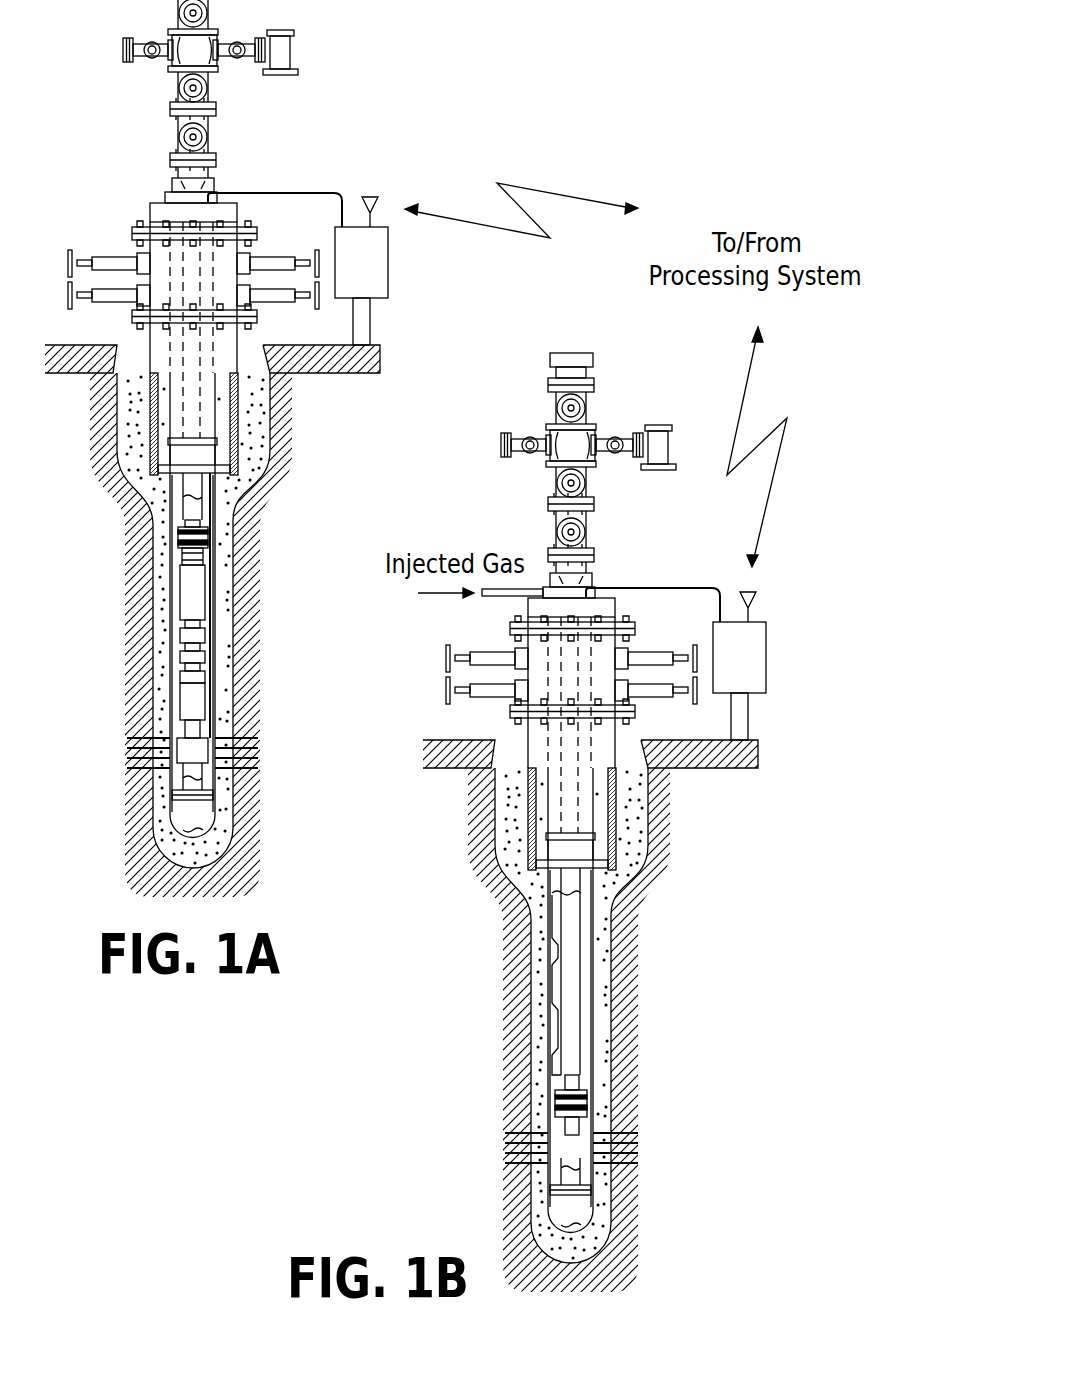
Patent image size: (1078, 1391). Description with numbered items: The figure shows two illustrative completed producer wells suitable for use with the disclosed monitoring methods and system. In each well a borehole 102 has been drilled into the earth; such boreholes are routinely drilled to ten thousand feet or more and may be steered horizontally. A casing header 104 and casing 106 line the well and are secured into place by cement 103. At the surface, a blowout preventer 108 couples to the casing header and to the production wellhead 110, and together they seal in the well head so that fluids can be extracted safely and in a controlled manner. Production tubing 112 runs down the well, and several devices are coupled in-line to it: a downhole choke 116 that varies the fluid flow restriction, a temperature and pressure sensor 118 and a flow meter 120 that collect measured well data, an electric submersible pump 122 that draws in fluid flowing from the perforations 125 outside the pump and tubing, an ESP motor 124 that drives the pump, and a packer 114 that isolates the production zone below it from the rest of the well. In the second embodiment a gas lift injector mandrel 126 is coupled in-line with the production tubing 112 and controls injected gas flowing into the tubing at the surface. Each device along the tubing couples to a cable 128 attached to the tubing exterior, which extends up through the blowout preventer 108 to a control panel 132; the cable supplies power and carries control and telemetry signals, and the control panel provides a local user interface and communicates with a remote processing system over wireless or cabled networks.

In FIG. 1A, the borehole 102 is at (117, 388).
In FIG. 1B, the borehole 102 is at (585, 1016).
In FIG. 1A, the cement 103 is at (150, 482).
In FIG. 1B, the cement 103 is at (530, 1015).
In FIG. 1A, the casing header 104 is at (150, 410).
In FIG. 1B, the casing header 104 is at (519, 819).
In FIG. 1A, the casing 106 is at (172, 618).
In FIG. 1B, the casing 106 is at (510, 1000).
In FIG. 1A, the blowout preventer 108 is at (149, 250).
In FIG. 1B, the blowout preventer 108 is at (554, 703).
In FIG. 1A, the production wellhead 110 is at (172, 66).
In FIG. 1B, the production wellhead 110 is at (556, 463).
In FIG. 1A, the production tubing 112 is at (183, 517).
In FIG. 1B, the production tubing 112 is at (518, 979).
In FIG. 1A, the packer 114 is at (178, 556).
In FIG. 1B, the packer 114 is at (518, 1112).
In FIG. 1A, the downhole choke 116 is at (185, 583).
In FIG. 1A, the temperature and pressure sensor 118 is at (182, 640).
In FIG. 1A, the flow meter 120 is at (182, 668).
In FIG. 1A, the electric submersible pump 122 is at (182, 693).
In FIG. 1A, the ESP motor 124 is at (190, 752).
In FIG. 1A, the perforations 125 is at (103, 738).
In FIG. 1B, the perforations 125 is at (571, 1159).
In FIG. 1B, the gas lift injector mandrel 126 is at (487, 985).
In FIG. 1A, the cable 128 is at (298, 193).
In FIG. 1B, the cable 128 is at (661, 587).
In FIG. 1A, the control panel 132 is at (370, 282).
In FIG. 1B, the control panel 132 is at (775, 666).